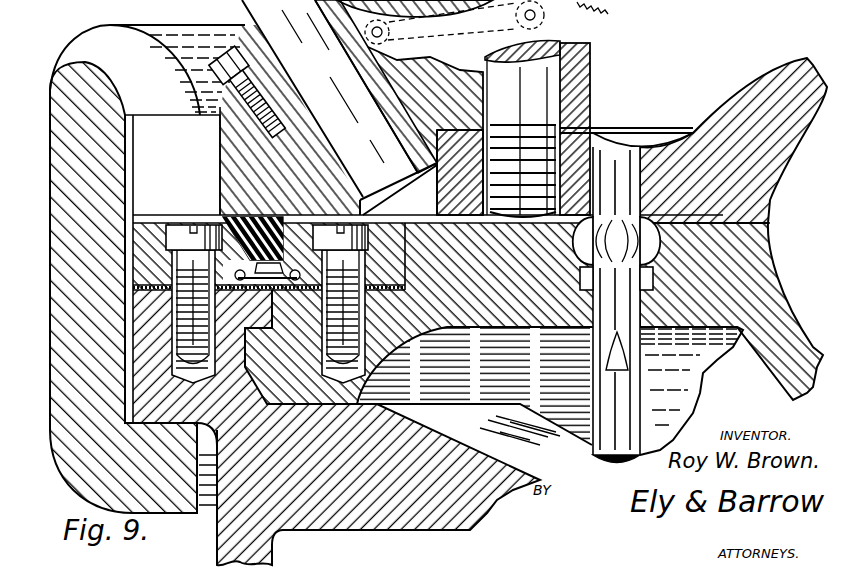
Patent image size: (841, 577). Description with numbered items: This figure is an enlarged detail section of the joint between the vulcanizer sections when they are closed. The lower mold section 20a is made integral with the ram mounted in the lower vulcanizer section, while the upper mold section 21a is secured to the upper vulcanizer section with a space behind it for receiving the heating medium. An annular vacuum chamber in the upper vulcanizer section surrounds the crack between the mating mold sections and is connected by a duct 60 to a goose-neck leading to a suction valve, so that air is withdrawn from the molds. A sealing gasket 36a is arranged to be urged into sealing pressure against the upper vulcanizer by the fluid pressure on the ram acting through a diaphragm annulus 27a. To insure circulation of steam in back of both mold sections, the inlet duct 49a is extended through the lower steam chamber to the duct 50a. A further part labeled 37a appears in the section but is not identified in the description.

The mold section 20a is at (797, 330).
The mold section 21a is at (753, 87).
The diaphragm annulus 27a is at (260, 294).
The sealing gasket 36a is at (222, 215).
The bushing 37a is at (437, 186).
The inlet duct 49a is at (603, 443).
The duct 50a is at (667, 243).
The duct 60 is at (372, 100).